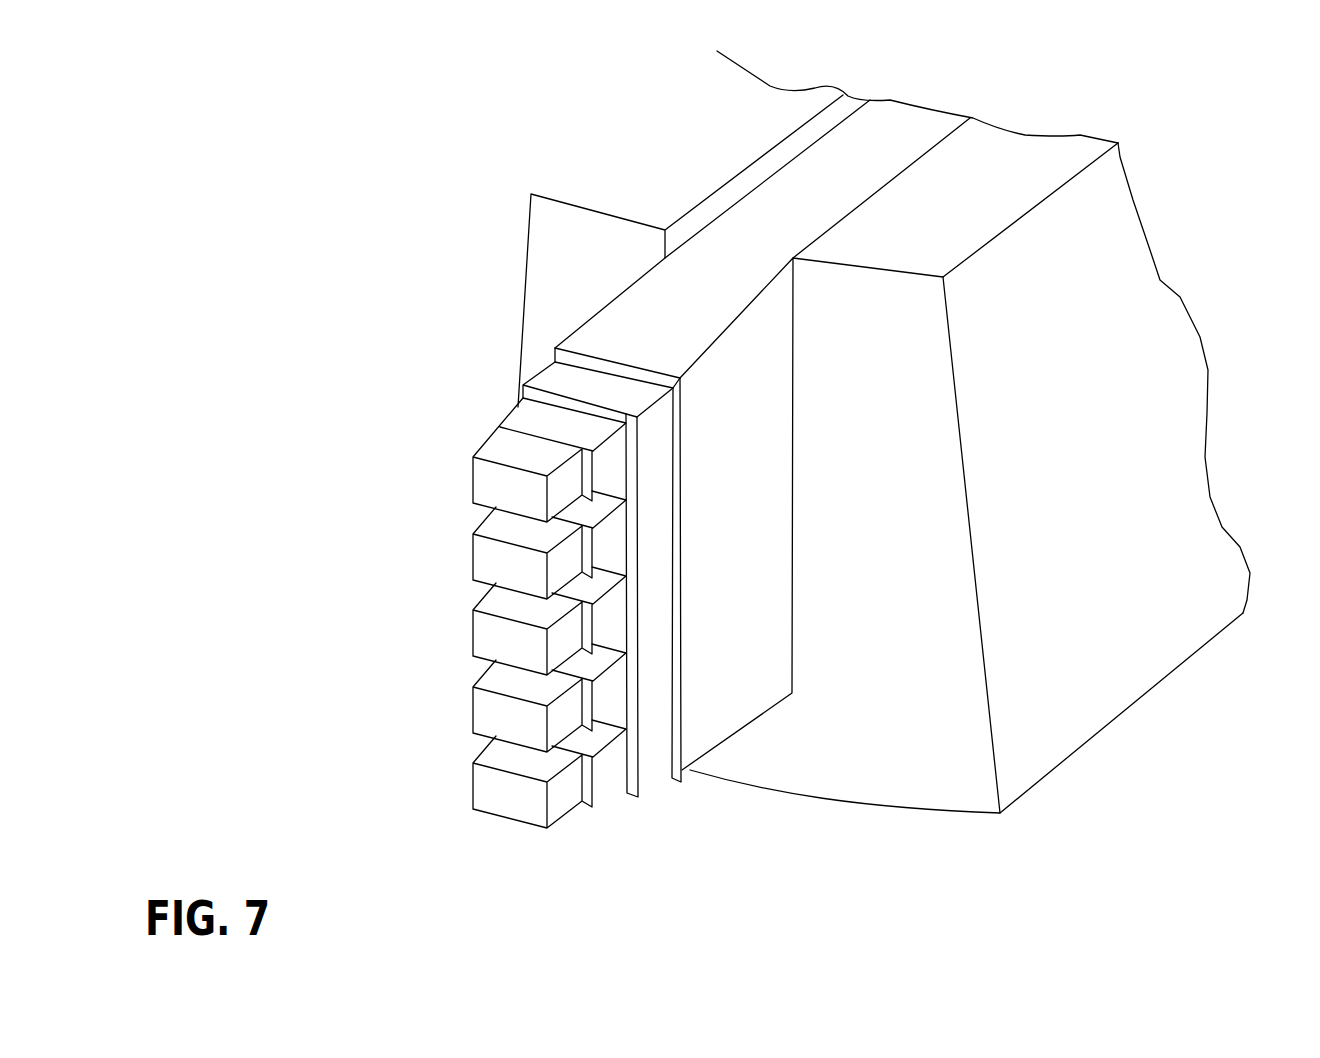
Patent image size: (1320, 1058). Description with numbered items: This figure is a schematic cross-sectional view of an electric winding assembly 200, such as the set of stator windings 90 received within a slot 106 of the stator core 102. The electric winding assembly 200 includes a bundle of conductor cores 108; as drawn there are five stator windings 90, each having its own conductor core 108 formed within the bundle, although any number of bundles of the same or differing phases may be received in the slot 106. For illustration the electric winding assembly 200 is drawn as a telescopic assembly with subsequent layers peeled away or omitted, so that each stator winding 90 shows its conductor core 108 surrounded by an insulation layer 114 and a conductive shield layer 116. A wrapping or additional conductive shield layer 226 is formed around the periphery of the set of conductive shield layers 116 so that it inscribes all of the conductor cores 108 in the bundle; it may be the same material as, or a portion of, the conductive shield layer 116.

The electric winding assembly 200 is at (378, 120).
The first body 102 is at (598, 125).
The additional conductive shield layer 226 is at (913, 118).
The slot 106 is at (792, 567).
The stator winding 90 is at (500, 400).
The conductor core 108 is at (508, 814).
The insulation layer 114 is at (604, 778).
The conductive shield layer 116 is at (655, 752).